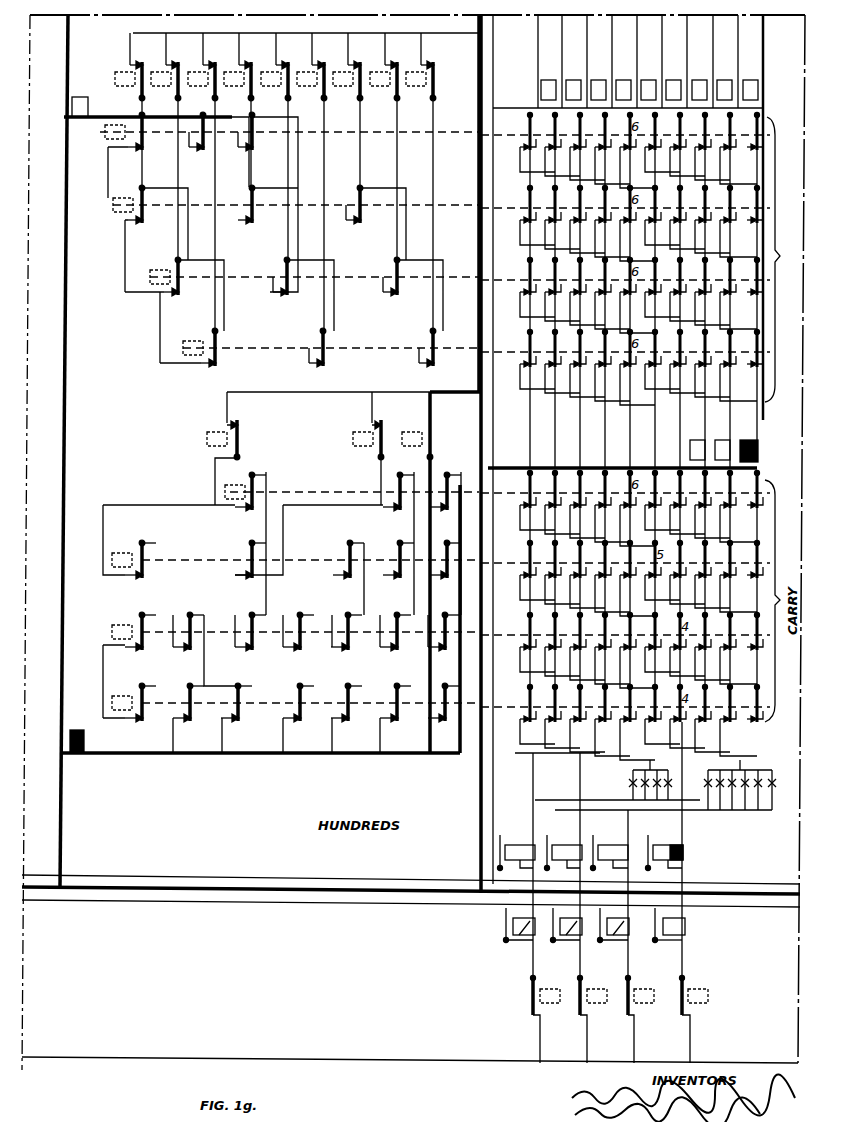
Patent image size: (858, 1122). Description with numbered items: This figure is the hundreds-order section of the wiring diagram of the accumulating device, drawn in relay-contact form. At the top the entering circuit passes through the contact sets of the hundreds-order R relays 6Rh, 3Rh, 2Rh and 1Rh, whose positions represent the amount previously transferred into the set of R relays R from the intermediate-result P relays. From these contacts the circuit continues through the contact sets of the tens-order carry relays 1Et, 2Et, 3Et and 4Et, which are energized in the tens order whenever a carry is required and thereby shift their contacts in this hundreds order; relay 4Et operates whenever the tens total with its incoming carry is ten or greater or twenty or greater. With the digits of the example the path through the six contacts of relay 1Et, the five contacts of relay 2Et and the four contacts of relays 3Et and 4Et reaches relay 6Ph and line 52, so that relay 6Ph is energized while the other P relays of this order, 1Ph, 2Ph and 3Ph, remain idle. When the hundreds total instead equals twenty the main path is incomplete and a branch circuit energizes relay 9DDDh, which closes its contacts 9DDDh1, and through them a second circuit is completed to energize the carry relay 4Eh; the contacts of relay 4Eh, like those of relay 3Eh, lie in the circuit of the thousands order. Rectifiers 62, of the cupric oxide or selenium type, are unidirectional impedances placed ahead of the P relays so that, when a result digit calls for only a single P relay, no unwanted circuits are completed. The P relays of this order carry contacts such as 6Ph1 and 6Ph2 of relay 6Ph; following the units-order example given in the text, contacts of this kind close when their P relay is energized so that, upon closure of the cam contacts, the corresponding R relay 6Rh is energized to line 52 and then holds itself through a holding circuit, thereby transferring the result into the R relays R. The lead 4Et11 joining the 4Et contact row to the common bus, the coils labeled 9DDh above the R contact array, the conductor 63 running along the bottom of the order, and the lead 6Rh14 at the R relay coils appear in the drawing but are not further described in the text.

The hundreds order carry relay 3Eh is at (80, 97).
The hundreds order R relay 6Rh is at (104, 136).
The hundreds order R relay 3Rh is at (110, 210).
The hundreds order R relay 2Rh is at (150, 283).
The hundreds order R relay 1Rh is at (182, 349).
The relay 9DDh coils and contacts 9DDh is at (420, 70).
The contacts of relay 9DDDh 9DDDh1 is at (420, 420).
The double carry relay 9DDDh is at (752, 440).
The tens order carry relay 1Et is at (222, 490).
The tens order carry relay 2Et is at (128, 552).
The tens order carry relay 3Et is at (118, 624).
The tens order carry relay 4Et is at (126, 695).
The hundreds order carry relay 4Eh is at (80, 753).
The conductor 4Et11 is at (440, 720).
The conductor 63 is at (138, 876).
The line 52 is at (192, 890).
The rectifiers 62 is at (770, 795).
The relay 1Ph is at (520, 845).
The relay 2Ph is at (570, 845).
The relay 3Ph is at (618, 845).
The relay 6Ph1 is at (650, 845).
The hundreds order P relay 6Ph is at (684, 855).
The conductor 6Rh14 is at (660, 940).
The contact 6Ph2 is at (688, 1014).
The R relays R is at (780, 259).